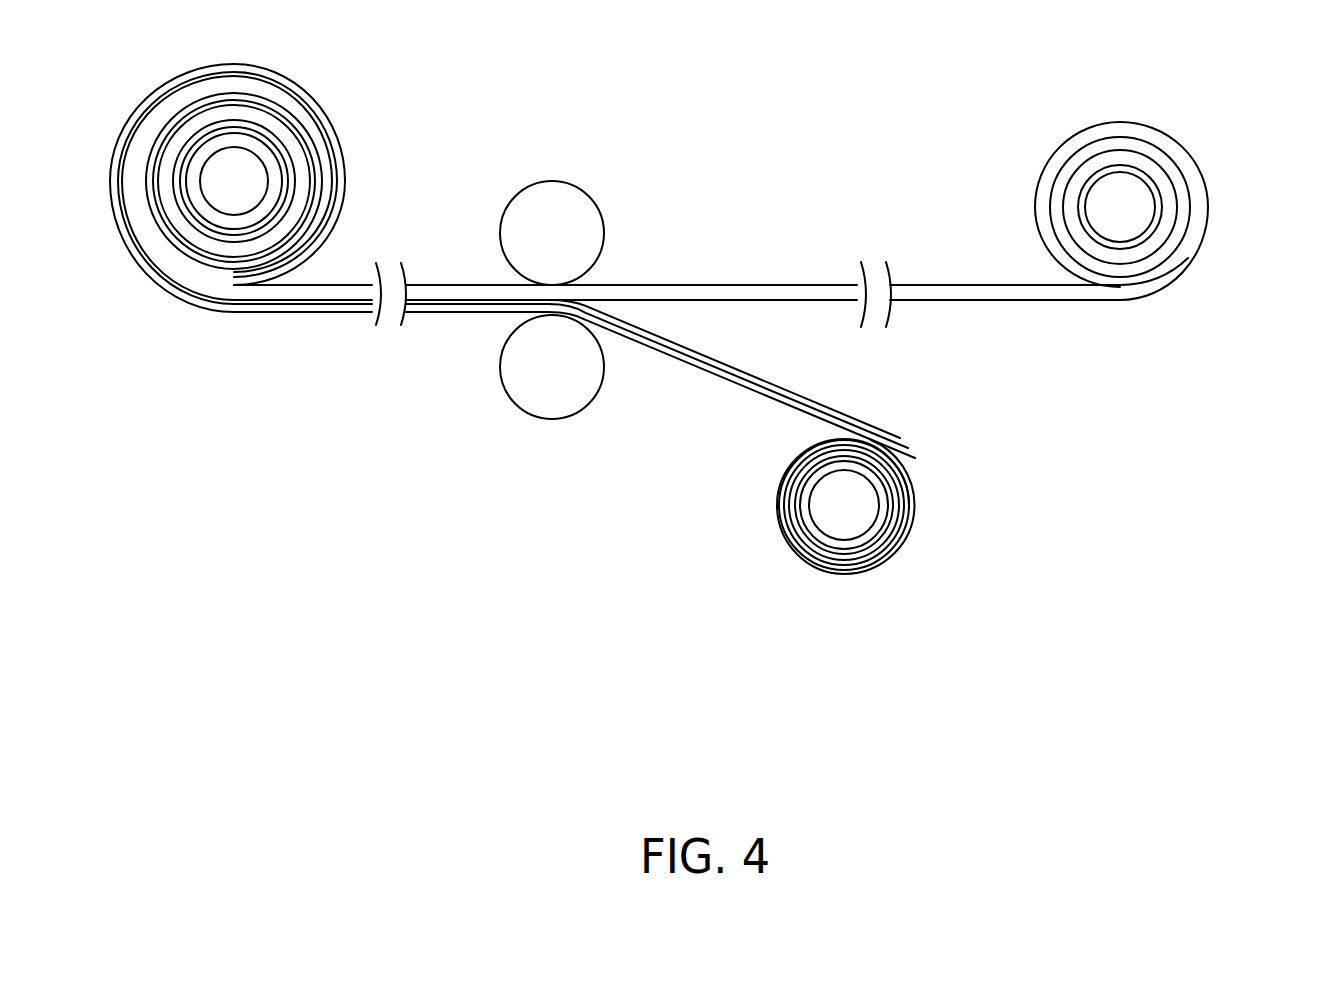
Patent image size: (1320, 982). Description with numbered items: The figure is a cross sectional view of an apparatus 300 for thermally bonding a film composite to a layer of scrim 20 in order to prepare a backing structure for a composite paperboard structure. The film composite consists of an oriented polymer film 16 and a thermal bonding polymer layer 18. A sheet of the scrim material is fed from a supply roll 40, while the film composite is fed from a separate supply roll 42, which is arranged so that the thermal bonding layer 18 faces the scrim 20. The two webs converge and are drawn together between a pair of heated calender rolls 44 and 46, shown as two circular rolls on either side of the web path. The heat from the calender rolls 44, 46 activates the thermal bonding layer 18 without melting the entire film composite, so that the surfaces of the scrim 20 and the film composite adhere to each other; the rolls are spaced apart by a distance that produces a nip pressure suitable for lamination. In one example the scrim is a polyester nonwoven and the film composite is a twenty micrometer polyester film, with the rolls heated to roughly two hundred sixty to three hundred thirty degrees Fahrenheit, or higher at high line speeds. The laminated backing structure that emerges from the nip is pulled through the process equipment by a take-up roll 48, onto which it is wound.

The web lamination and winding system 300 is at (745, 150).
The take-up roll 48 is at (362, 143).
The heated calender roll 44 is at (578, 203).
The heated calender roll 46 is at (522, 398).
The scrim 20 is at (1012, 301).
The thermal bonding polymer layer 18 is at (777, 383).
The oriented polymer film 16 is at (755, 393).
The supply roll 42 is at (907, 560).
The supply roll 40 is at (1224, 207).